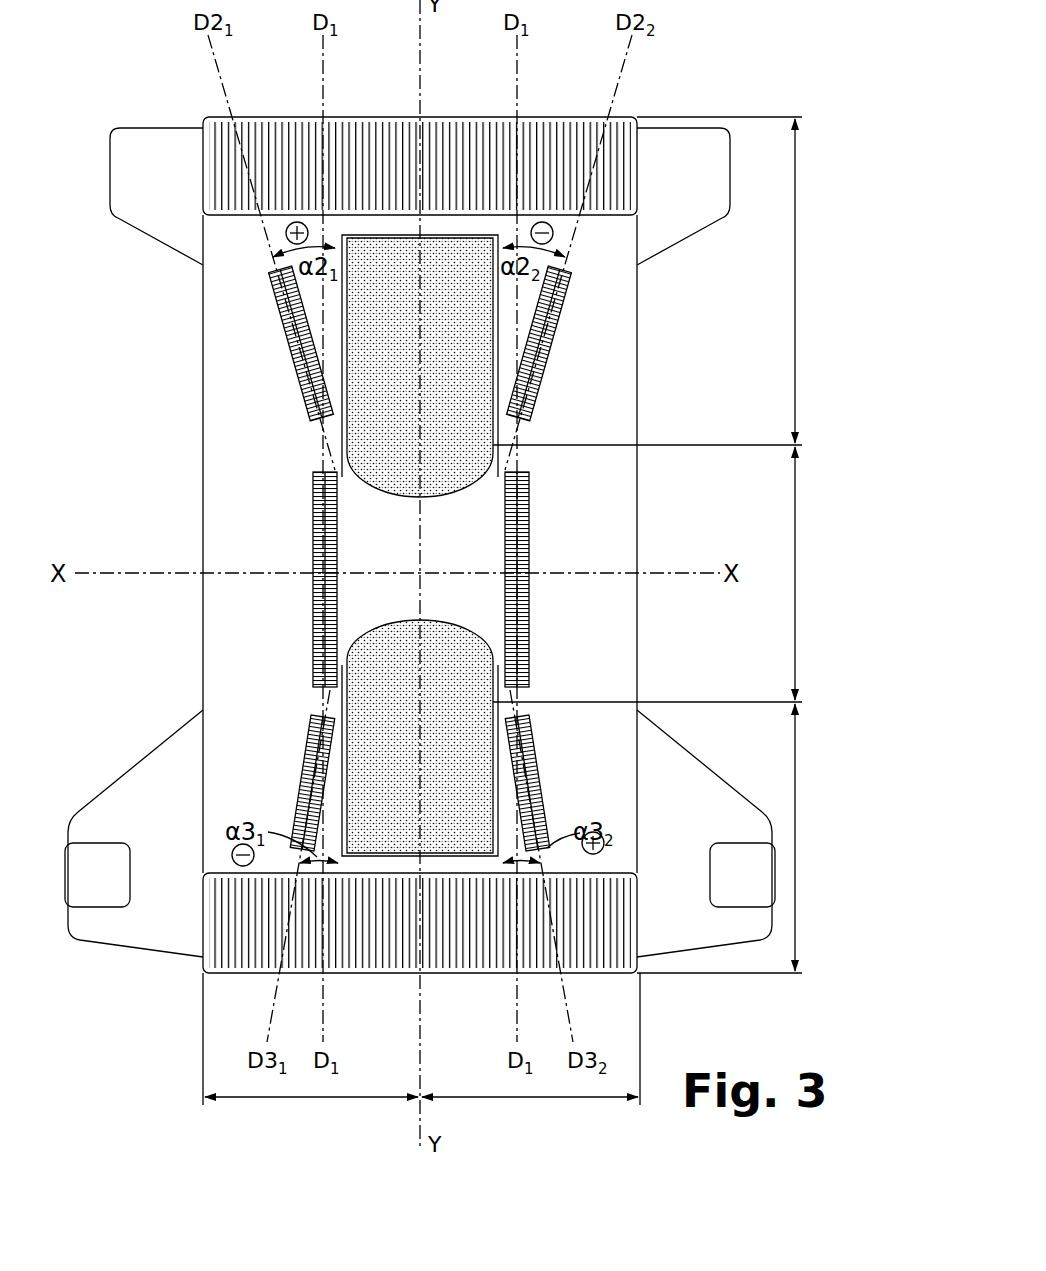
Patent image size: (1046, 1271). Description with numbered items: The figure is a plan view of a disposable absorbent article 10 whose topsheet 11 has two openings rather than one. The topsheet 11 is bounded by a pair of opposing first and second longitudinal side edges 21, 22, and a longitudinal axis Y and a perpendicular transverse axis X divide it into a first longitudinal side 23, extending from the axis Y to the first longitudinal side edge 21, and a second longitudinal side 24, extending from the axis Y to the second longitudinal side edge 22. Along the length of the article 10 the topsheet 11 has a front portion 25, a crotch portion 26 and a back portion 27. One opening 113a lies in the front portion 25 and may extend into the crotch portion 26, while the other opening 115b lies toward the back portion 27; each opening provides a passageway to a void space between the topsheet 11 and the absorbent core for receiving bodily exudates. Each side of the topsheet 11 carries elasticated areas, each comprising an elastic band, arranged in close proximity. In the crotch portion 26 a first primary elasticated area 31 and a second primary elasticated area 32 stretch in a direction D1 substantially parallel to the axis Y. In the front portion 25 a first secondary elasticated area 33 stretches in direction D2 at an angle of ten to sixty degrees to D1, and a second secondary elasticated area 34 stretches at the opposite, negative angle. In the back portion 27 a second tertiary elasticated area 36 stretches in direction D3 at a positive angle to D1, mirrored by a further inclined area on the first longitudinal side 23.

The disposable absorbent article 10 is at (668, 100).
The topsheet 11 is at (240, 307).
The first longitudinal side edge 21 is at (203, 437).
The second longitudinal side edge 22 is at (637, 408).
The first longitudinal side 23 is at (310, 1050).
The second longitudinal side 24 is at (531, 1050).
The front portion 25 is at (660, 281).
The crotch portion 26 is at (660, 574).
The back portion 27 is at (732, 838).
The first primary elasticated area 31 is at (313, 538).
The second primary elasticated area 32 is at (530, 538).
The first secondary elasticated area 33 is at (283, 330).
The second secondary elasticated area 34 is at (557, 330).
The second tertiary elasticated area 36 is at (542, 778).
The opening 113a is at (392, 373).
The opening 115b is at (392, 677).